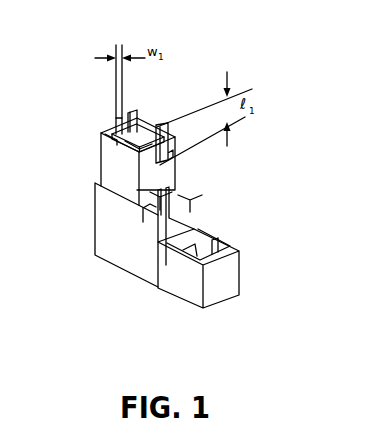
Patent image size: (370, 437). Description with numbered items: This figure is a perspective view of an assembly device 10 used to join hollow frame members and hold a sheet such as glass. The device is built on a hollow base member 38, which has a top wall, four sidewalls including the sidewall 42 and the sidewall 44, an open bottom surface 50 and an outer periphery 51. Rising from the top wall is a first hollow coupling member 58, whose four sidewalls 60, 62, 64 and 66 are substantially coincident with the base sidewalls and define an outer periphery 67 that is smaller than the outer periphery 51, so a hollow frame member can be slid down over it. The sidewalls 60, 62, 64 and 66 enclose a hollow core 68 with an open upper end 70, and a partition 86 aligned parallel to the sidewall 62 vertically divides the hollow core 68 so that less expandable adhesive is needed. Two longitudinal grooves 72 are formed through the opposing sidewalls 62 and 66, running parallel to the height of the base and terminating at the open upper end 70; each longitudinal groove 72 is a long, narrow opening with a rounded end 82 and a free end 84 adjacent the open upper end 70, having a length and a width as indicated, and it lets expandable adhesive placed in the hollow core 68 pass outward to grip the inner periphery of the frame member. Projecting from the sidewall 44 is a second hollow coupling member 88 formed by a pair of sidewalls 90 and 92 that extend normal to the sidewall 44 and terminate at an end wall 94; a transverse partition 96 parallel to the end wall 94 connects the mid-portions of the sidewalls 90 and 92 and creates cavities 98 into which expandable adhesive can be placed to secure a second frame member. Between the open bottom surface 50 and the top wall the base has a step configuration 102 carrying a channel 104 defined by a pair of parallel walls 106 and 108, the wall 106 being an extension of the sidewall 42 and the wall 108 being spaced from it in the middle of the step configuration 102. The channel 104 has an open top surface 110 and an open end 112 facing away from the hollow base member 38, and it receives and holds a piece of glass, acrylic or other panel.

The assembly device 10 is at (243, 52).
The hollow base member 38 is at (166, 252).
The sidewall 42 is at (131, 243).
The sidewall 44 is at (213, 212).
The open bottom surface 50 is at (115, 268).
The outer periphery 51 is at (95, 237).
The first hollow coupling member 58 is at (150, 132).
The sidewall 60 is at (126, 184).
The sidewall 62 is at (156, 190).
The sidewall 64 is at (143, 128).
The sidewall 66 is at (108, 126).
The outer periphery 67 is at (99, 163).
The hollow core 68 is at (149, 108).
The open upper end 70 is at (134, 111).
The longitudinal groove 72 is at (117, 122).
The rounded end 82 is at (184, 158).
The free end 84 is at (166, 128).
The partition 86 is at (118, 143).
The second hollow coupling member 88 is at (231, 269).
The sidewall 90 is at (193, 293).
The sidewall 92 is at (186, 248).
The end wall 94 is at (228, 291).
The transverse partition 96 is at (193, 253).
The cavities 98 is at (173, 199).
The step configuration 102 is at (197, 196).
The channel 104 is at (178, 182).
The wall 106 is at (150, 206).
The wall 108 is at (182, 187).
The open top surface 110 is at (137, 207).
The open end 112 is at (158, 215).